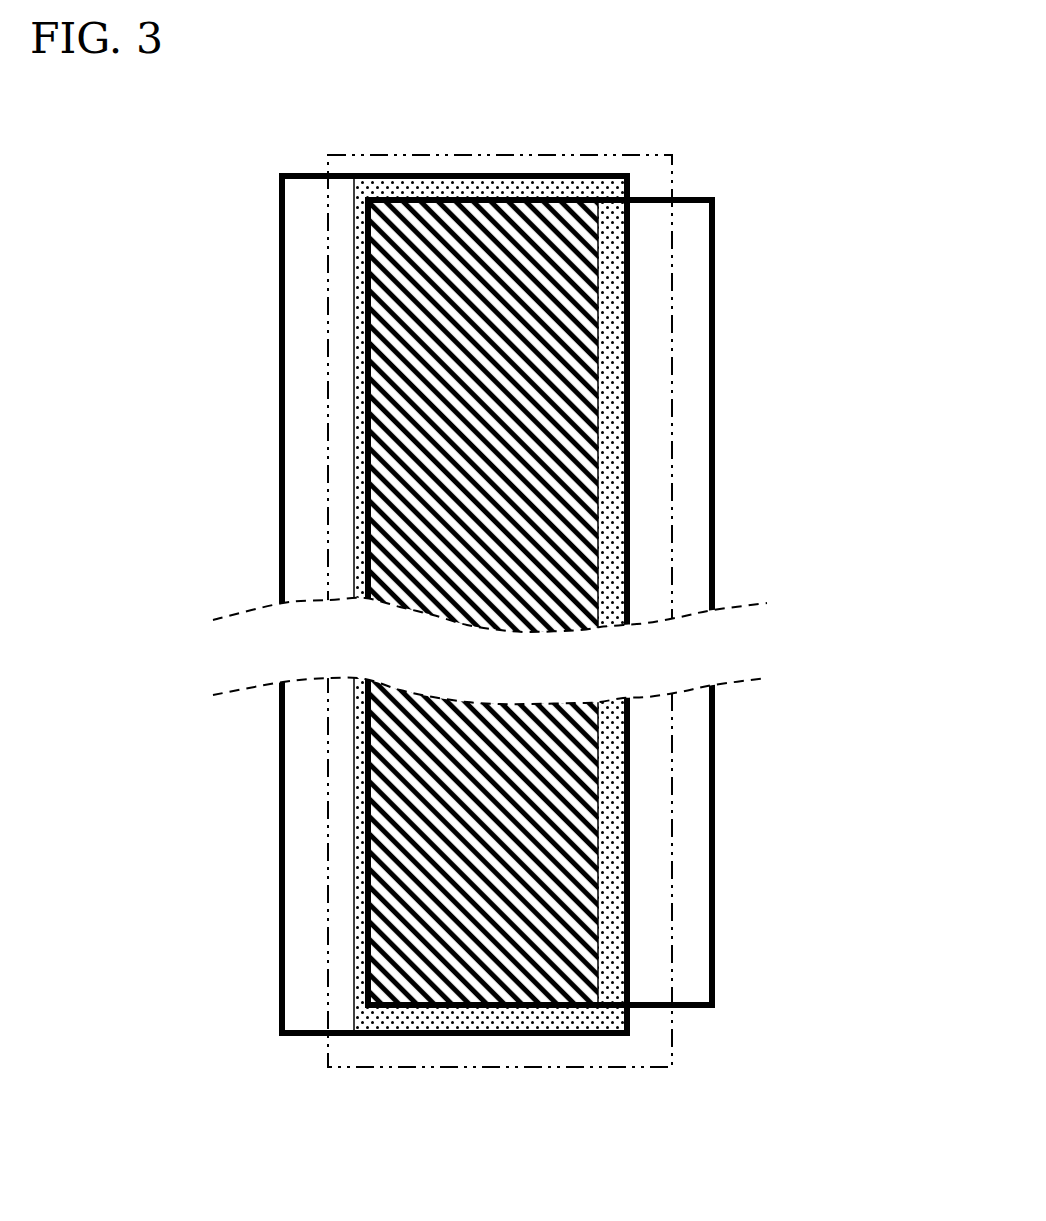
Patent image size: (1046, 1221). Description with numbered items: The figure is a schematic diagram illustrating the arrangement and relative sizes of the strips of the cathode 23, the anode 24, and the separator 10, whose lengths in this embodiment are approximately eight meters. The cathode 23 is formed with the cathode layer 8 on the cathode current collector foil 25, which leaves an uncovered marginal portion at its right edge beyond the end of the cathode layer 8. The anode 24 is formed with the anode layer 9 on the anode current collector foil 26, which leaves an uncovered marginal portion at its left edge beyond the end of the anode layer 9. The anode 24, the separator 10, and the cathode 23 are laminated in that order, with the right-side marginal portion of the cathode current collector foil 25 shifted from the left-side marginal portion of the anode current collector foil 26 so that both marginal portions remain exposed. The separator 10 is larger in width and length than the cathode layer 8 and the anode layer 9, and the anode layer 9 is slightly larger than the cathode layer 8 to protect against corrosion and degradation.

The cathode layer 8 is at (487, 514).
The anode layer 9 is at (355, 1021).
The separator 10 is at (628, 152).
The cathode 23 is at (713, 448).
The anode 24 is at (280, 890).
The cathode current collector foil 25 is at (688, 295).
The anode current collector foil 26 is at (300, 493).